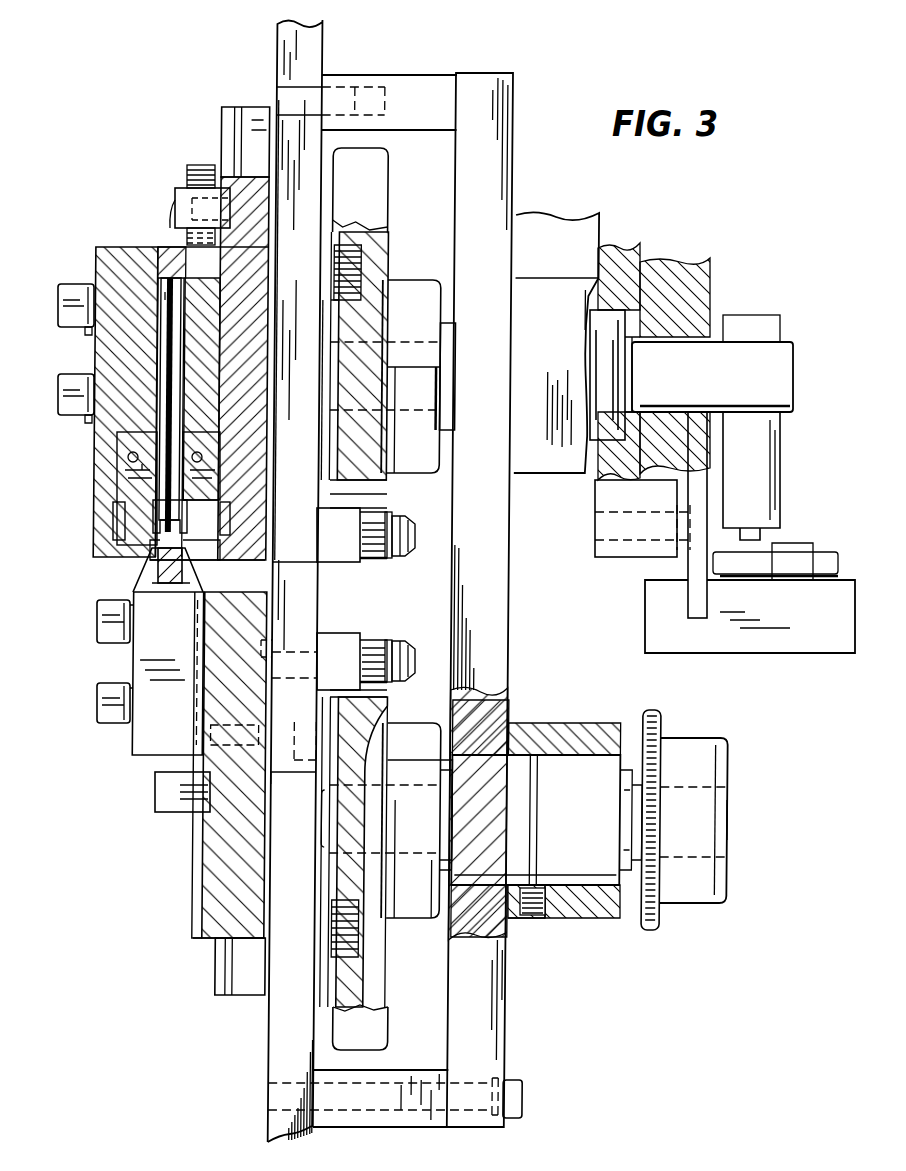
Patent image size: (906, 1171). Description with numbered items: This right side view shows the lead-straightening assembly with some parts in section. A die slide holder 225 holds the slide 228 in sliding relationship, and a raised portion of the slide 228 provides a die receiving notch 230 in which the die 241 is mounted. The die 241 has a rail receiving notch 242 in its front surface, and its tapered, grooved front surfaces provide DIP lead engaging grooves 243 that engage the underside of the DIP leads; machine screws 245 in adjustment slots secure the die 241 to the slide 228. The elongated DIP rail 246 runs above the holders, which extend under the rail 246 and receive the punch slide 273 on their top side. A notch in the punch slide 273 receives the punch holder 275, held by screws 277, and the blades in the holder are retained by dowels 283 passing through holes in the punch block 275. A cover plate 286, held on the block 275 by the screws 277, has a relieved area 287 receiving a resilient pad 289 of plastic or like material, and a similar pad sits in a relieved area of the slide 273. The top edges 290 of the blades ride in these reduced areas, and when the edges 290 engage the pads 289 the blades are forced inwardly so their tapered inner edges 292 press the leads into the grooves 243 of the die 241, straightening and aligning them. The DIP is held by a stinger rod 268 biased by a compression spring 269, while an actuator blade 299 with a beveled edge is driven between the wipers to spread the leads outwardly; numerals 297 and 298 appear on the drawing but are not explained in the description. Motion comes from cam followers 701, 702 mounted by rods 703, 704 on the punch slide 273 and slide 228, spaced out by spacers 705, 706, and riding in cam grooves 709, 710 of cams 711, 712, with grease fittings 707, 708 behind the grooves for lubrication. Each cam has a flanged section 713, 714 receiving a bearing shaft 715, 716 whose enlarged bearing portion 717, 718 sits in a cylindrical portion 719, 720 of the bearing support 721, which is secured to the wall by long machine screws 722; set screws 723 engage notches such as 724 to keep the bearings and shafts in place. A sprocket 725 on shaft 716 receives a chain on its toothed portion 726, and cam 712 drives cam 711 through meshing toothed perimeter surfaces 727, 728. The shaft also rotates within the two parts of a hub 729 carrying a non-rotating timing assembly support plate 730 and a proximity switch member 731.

The die slide holder 225 is at (245, 982).
The slide 228 is at (210, 930).
The die receiving notch 230 is at (194, 706).
The die 241 is at (177, 644).
The rail receiving notch 242 is at (157, 584).
The DIP lead engaging grooves 243 is at (207, 583).
The machine screws 245 is at (97, 698).
The DIP rail 246 is at (158, 552).
The stinger rod 268 is at (128, 456).
The compression spring 269 is at (163, 292).
The punch slide 273 is at (264, 307).
The punch holder 275 is at (141, 248).
The screws 277 is at (76, 329).
The dowels 283 is at (145, 466).
The cover plate 286 is at (105, 269).
The relieved area 287 is at (113, 514).
The resilient pad 289 is at (230, 510).
The top edges 290 is at (117, 445).
The tapered inner edges 292 is at (186, 531).
The screw 297 is at (213, 180).
The lock washer 298 is at (176, 198).
The actuator blade 299 is at (180, 186).
The cam follower 701 is at (367, 556).
The cam follower 702 is at (368, 628).
The rod 703 is at (342, 502).
The rod 704 is at (287, 642).
The spacer 705 is at (300, 354).
The spacer 706 is at (276, 776).
The grease fitting 707 is at (428, 542).
The grease fitting 708 is at (406, 650).
The cam groove 709 is at (362, 498).
The cam groove 710 is at (367, 694).
The cam 711 is at (371, 371).
The cam 712 is at (356, 729).
The flanged section 713 is at (399, 280).
The flanged section 714 is at (394, 913).
The bearing shaft 715 is at (442, 423).
The bearing shaft 716 is at (407, 781).
The enlarged bearing portion 717 is at (603, 476).
The enlarged bearing portion 718 is at (582, 915).
The cylindrical portion 719 is at (548, 920).
The cylindrical portion 720 is at (578, 277).
The bearing support 721 is at (512, 1003).
The long machine screws 722 is at (330, 88).
The set screws 723 is at (547, 930).
The notch 724 is at (535, 791).
The sprocket 725 is at (698, 900).
The toothed portion 726 is at (654, 931).
The toothed perimeter surface 727 is at (387, 1045).
The toothed perimeter surface 728 is at (384, 152).
The hub 729 is at (652, 560).
The timing assembly support plate 730 is at (690, 605).
The proximity switch member 731 is at (781, 510).